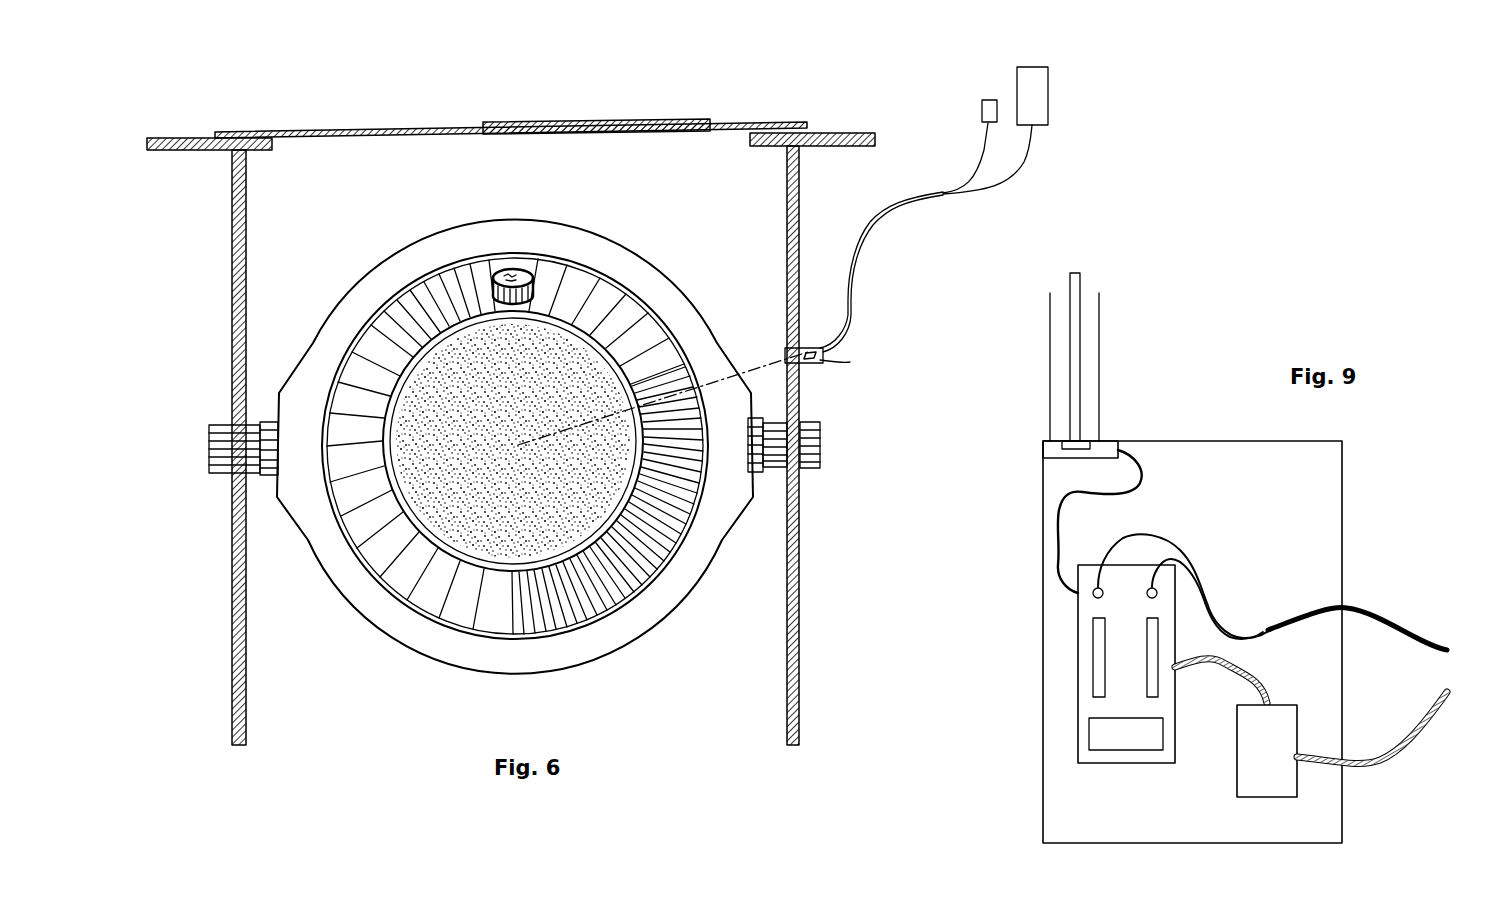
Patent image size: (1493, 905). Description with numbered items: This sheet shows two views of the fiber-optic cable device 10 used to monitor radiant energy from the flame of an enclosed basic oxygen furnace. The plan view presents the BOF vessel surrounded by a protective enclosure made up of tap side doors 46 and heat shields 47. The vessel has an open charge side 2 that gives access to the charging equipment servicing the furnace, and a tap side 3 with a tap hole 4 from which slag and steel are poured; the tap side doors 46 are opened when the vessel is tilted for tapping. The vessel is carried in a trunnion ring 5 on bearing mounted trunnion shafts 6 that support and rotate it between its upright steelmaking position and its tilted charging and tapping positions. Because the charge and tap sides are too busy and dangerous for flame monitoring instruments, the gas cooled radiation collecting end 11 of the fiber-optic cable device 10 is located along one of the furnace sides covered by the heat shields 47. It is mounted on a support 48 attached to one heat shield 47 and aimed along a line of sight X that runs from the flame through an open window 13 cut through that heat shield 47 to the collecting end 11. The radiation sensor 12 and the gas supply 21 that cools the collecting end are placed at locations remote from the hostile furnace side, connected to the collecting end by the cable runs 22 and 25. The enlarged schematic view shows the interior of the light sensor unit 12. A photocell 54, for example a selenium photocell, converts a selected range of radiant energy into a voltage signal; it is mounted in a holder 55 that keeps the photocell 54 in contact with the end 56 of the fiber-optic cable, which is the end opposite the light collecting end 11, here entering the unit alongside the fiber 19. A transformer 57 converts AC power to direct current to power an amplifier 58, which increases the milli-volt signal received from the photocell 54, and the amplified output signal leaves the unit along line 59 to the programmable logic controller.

In FIG. 6, the charge side 2 is at (513, 626).
In FIG. 6, the tap side 3 is at (503, 233).
In FIG. 6, the tap hole 4 is at (533, 292).
In FIG. 6, the trunnion ring 5 is at (663, 290).
In FIG. 6, the trunnion shafts 6 is at (214, 440).
In FIG. 6, the fiber-optic cable device 10 is at (893, 229).
In FIG. 9, the fiber-optic cable device 10 is at (1212, 335).
In FIG. 6, the radiation collecting end 11 is at (808, 352).
In FIG. 6, the radiation sensor 12 is at (982, 110).
In FIG. 9, the radiation sensor 12 is at (1315, 496).
In FIG. 6, the open window 13 is at (785, 355).
In FIG. 9, the rod 19 is at (1093, 335).
In FIG. 6, the gas supply 21 is at (1040, 98).
In FIG. 6, the power cable 22 is at (1020, 175).
In FIG. 6, the signal cable 25 is at (976, 166).
In FIG. 9, the signal cable 25 is at (1075, 378).
In FIG. 6, the tap side doors 46 is at (612, 124).
In FIG. 6, the heat shields 47 is at (235, 522).
In FIG. 6, the support 48 is at (822, 360).
In FIG. 9, the photocell 54 is at (1073, 457).
In FIG. 9, the holder 55 is at (1112, 440).
In FIG. 9, the end of the fiber-optic cable 56 is at (1070, 440).
In FIG. 9, the transformer 57 is at (1240, 755).
In FIG. 9, the amplifier 58 is at (1083, 633).
In FIG. 9, the line 59 is at (1365, 608).
In FIG. 6, the line of sight X is at (765, 370).